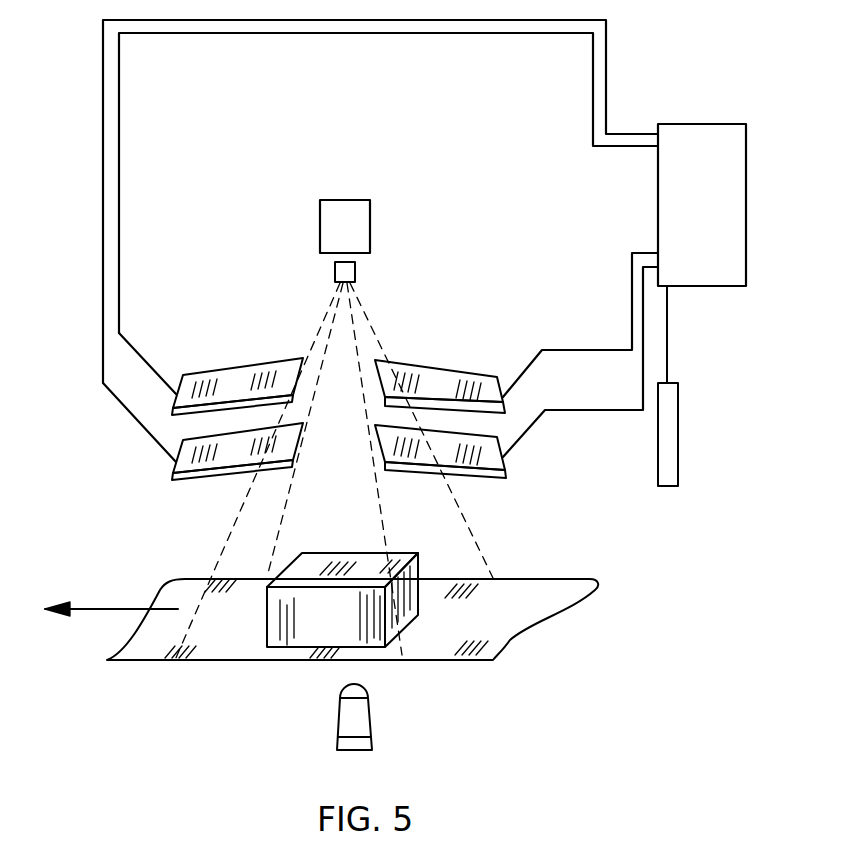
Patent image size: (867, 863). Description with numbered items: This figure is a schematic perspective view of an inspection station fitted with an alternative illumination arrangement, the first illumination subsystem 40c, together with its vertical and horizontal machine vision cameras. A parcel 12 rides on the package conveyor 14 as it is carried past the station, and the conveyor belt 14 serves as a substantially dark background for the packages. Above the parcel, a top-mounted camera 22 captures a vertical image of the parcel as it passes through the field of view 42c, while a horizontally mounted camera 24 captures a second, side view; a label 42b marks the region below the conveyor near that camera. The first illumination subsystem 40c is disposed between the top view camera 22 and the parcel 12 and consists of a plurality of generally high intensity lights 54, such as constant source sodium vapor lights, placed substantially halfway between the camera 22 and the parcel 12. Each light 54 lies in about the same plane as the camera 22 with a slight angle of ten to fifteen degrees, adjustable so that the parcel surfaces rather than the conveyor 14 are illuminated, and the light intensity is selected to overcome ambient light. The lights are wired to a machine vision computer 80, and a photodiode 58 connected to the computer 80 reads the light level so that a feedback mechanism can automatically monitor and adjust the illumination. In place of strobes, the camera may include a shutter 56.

The parcel 12 is at (348, 631).
The package conveyor 14 is at (562, 579).
The top-mounted camera 22 is at (370, 243).
The horizontally mounted camera 24 is at (398, 709).
The first illumination subsystem 40c is at (485, 288).
The bottom side of package 42b is at (290, 703).
The field of view 42c is at (362, 535).
The high intensity lights 54 is at (174, 394).
The shutter 56 is at (368, 695).
The photodiode 58 is at (678, 430).
The machine vision computer 80 is at (717, 219).